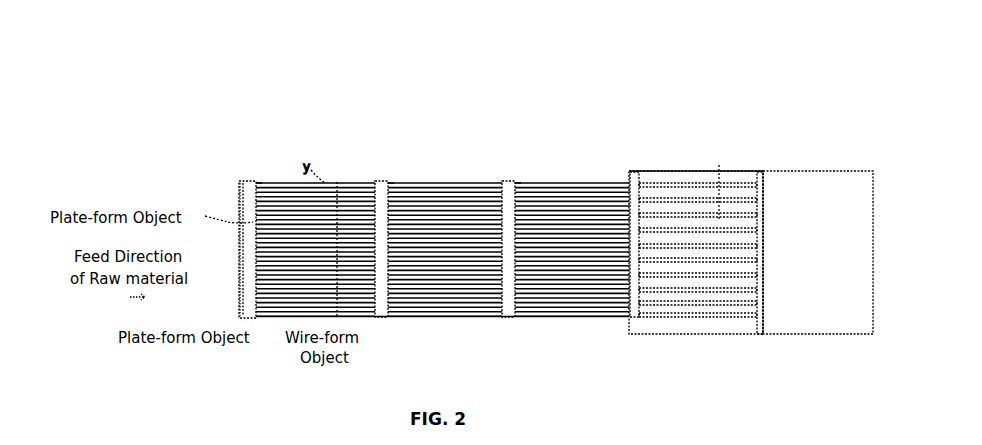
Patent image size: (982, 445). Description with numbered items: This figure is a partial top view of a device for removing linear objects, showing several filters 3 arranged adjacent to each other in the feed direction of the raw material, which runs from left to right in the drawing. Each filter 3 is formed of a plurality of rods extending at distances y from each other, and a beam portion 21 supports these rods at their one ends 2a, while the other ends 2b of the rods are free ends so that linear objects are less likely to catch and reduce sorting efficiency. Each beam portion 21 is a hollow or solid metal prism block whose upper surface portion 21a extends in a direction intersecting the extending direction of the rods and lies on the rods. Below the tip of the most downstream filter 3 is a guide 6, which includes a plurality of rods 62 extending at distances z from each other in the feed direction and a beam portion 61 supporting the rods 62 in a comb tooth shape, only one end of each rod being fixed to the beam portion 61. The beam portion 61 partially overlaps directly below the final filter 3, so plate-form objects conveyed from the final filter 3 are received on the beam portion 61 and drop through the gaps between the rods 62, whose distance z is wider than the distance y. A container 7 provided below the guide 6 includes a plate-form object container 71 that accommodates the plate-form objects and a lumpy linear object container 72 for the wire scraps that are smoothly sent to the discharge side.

The one ends of the rods 2a is at (236, 193).
The other ends of the rods 2b is at (380, 318).
The filter 3 is at (305, 137).
The beam portion 21 is at (248, 180).
The upper surface portion 21a is at (312, 182).
The guide 6 is at (692, 153).
The beam portion of the guide 61 is at (630, 178).
The rods of the guide 62 is at (667, 184).
The container 7 is at (722, 183).
The plate-form object container 71 is at (668, 336).
The lumpy linear object container 72 is at (812, 336).